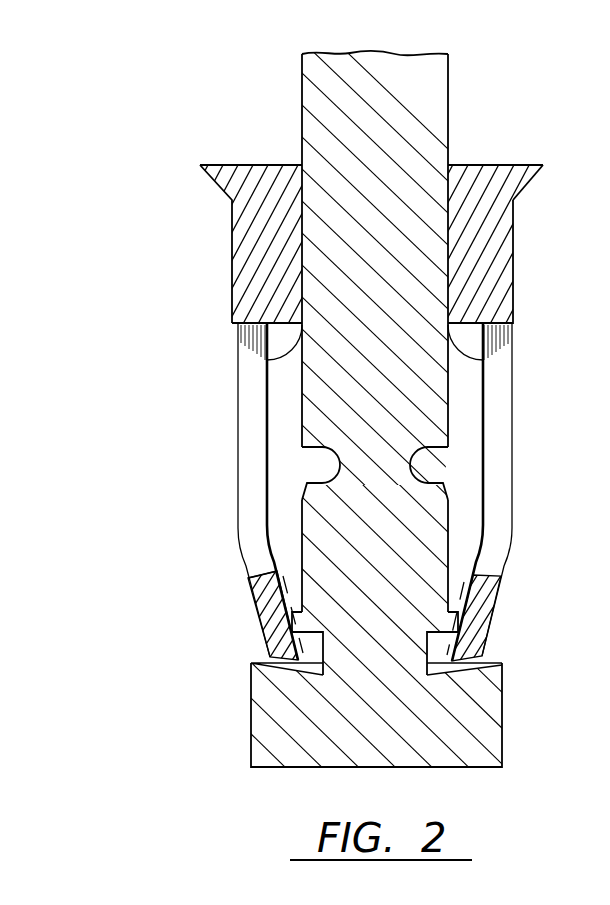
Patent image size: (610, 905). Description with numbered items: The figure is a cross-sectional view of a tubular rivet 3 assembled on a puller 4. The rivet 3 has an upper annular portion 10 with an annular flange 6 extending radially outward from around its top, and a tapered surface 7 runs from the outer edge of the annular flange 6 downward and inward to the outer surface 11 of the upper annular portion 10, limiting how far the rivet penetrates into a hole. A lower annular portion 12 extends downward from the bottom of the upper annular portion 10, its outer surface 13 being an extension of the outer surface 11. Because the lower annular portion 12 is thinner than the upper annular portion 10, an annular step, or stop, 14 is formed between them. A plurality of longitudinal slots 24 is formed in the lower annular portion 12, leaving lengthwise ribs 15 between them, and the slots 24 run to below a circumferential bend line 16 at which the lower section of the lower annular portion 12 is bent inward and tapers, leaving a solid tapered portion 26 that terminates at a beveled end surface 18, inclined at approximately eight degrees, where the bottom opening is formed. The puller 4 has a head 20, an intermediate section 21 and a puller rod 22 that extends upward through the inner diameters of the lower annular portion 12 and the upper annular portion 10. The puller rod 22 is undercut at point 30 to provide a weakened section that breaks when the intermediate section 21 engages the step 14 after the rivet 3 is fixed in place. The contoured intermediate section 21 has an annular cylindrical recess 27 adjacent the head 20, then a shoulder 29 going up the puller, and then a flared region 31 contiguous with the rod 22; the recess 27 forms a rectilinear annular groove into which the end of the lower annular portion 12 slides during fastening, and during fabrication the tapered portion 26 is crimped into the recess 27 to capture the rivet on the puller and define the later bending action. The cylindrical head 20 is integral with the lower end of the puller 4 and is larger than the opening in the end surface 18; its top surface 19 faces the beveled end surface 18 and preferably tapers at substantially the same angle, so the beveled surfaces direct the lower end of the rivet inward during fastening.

The rivet 3 is at (230, 272).
The puller 4 is at (452, 140).
The annular flange 6 is at (250, 165).
The tapered surface 7 is at (526, 184).
The upper annular portion 10 is at (490, 258).
The outer surface 11 is at (232, 221).
The lower annular portion 12 is at (515, 405).
The outer surface 13 is at (257, 605).
The annular step 14 is at (262, 350).
The lengthwise ribs 15 is at (238, 405).
The circumferential bend line 16 is at (238, 537).
The end surface 18 is at (262, 668).
The top surface 19 is at (503, 665).
The head 20 is at (275, 740).
The intermediate section 21 is at (458, 568).
The puller rod 22 is at (450, 97).
The longitudinal slots 24 is at (245, 455).
The solid tapered portion 26 is at (268, 633).
The annular cylindrical recess 27 is at (485, 640).
The shoulder 29 is at (278, 648).
The undercut point 30 is at (410, 467).
The flared region 31 is at (262, 572).